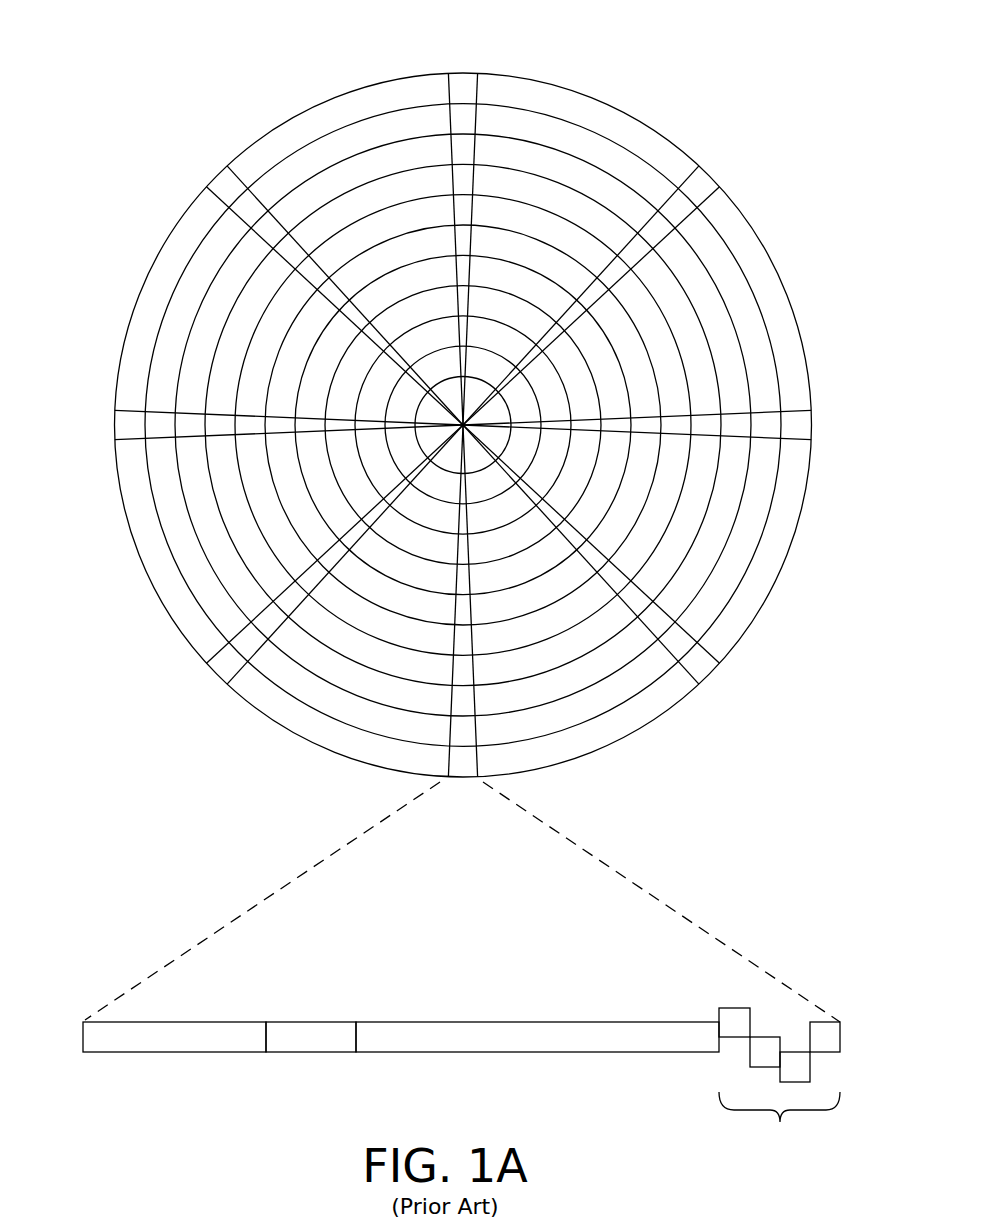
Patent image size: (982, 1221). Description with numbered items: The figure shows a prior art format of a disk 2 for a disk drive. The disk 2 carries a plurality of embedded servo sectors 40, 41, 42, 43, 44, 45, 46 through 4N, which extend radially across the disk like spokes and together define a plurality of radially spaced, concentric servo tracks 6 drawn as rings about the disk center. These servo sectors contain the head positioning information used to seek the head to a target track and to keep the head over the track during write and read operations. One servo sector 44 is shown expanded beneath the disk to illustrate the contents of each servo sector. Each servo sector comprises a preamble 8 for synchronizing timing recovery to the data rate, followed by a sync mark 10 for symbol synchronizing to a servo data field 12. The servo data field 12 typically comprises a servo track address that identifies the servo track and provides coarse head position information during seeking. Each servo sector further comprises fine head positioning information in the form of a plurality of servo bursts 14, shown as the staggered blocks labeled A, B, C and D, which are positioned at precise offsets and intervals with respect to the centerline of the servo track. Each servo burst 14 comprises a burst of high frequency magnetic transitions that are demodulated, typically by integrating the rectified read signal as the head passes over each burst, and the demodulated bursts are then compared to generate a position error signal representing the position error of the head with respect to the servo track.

The disk 2 is at (206, 73).
The servo tracks 6 is at (582, 142).
The embedded servo sector 40 is at (463, 80).
The embedded servo sector 41 is at (700, 183).
The embedded servo sector 42 is at (805, 426).
The embedded servo sector 43 is at (698, 667).
The embedded servo sector 44 is at (309, 860).
The embedded servo sector 45 is at (222, 668).
The embedded servo sector 46 is at (118, 423).
The embedded servo sector 4N is at (225, 180).
The preamble 8 is at (153, 1054).
The sync mark 10 is at (306, 1054).
The servo data field 12 is at (523, 1054).
The servo bursts 14 is at (705, 986).